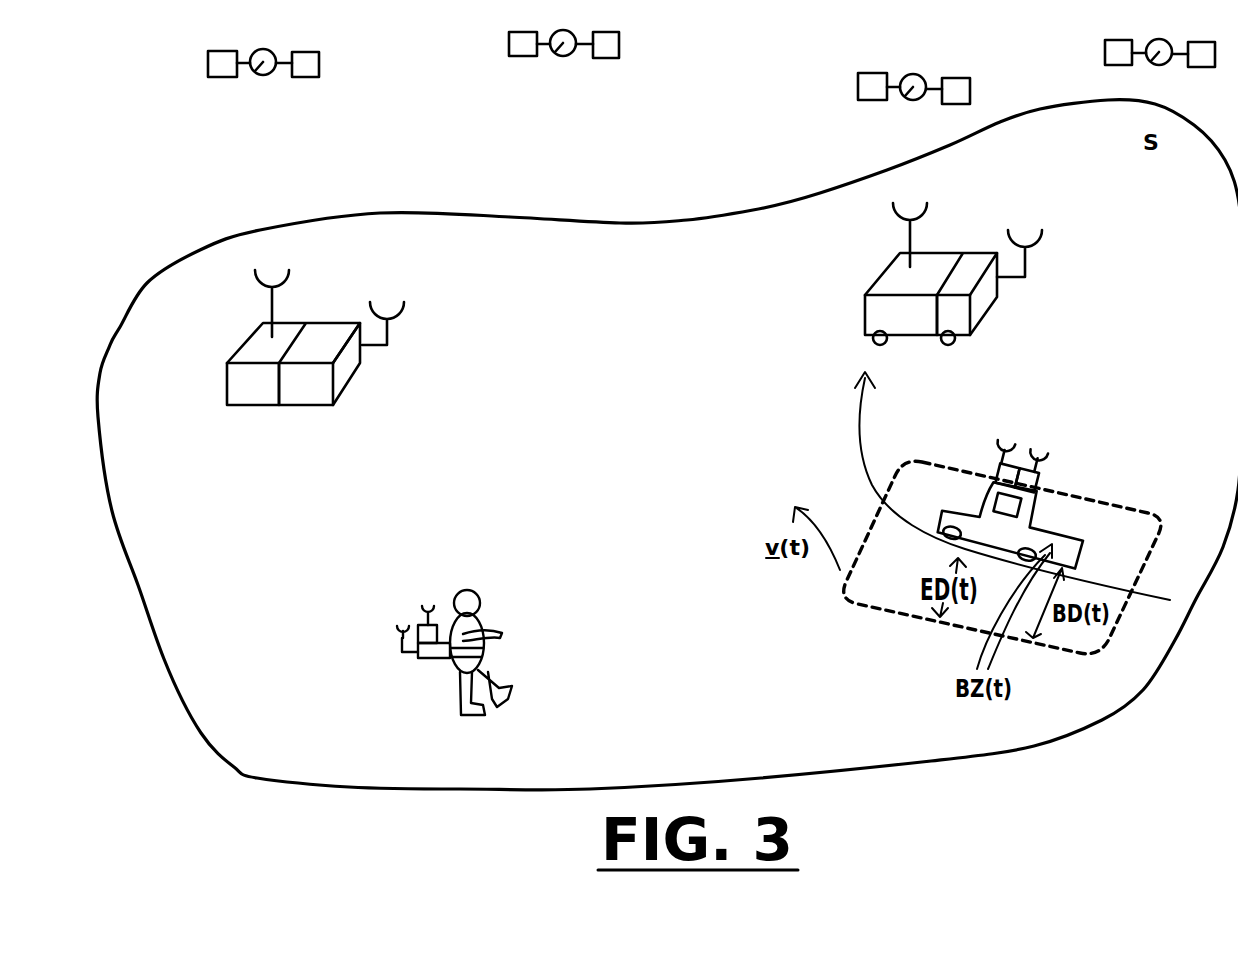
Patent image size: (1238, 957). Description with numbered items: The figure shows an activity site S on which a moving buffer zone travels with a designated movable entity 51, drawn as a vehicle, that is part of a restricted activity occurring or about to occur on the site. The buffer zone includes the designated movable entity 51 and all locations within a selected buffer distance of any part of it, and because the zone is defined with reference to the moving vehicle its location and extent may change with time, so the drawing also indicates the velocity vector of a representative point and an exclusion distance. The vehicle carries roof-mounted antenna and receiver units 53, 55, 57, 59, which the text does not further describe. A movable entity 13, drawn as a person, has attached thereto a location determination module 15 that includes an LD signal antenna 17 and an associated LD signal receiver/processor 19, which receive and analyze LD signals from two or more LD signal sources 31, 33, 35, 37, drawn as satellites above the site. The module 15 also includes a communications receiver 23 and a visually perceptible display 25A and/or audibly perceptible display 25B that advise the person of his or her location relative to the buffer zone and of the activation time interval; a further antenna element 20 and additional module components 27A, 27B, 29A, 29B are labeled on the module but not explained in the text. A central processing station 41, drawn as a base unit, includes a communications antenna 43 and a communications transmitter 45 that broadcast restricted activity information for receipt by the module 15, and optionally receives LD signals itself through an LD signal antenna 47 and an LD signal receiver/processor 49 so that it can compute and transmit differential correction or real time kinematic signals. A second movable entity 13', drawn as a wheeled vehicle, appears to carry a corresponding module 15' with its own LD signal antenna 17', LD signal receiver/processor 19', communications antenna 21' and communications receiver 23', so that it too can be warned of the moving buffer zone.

The movable entity 13 is at (431, 619).
The location determination (LD) module 15 is at (369, 619).
The LD signal antenna 17 is at (400, 570).
The LD signal receiver/processor 19 is at (371, 595).
The second antenna unit 20 is at (403, 643).
The communications receiver (or transceiver) 23 is at (367, 700).
The visually perceptible display 25A is at (367, 700).
The audibly perceptible display 25B is at (367, 700).
The transmitter 27A is at (367, 700).
The transmitter 27B is at (395, 700).
The receiver 29A is at (424, 700).
The receiver 29B is at (446, 700).
The LD signal source 31 is at (253, 69).
The LD signal source 33 is at (556, 52).
The LD signal source 35 is at (906, 97).
The LD signal source 37 is at (1152, 62).
The central processing station 41 is at (298, 324).
The communications antenna 43 is at (388, 333).
The communications transmitter (or transceiver) 45 is at (338, 378).
The LD signal antenna 47 is at (270, 308).
The LD signal receiver/processor 49 is at (242, 393).
The designated movable entity 51 is at (1024, 467).
The vehicle antenna 53 is at (1035, 460).
The vehicle unit 55 is at (1033, 475).
The vehicle antenna 57 is at (992, 460).
The vehicle unit 59 is at (998, 472).
The mobile vehicle unit 13' is at (937, 293).
The portable device on vehicle 15' is at (937, 318).
The antenna 17' is at (866, 235).
The receiver unit 19' is at (911, 339).
The antenna 21' is at (1047, 251).
The processing unit 23' is at (1009, 294).